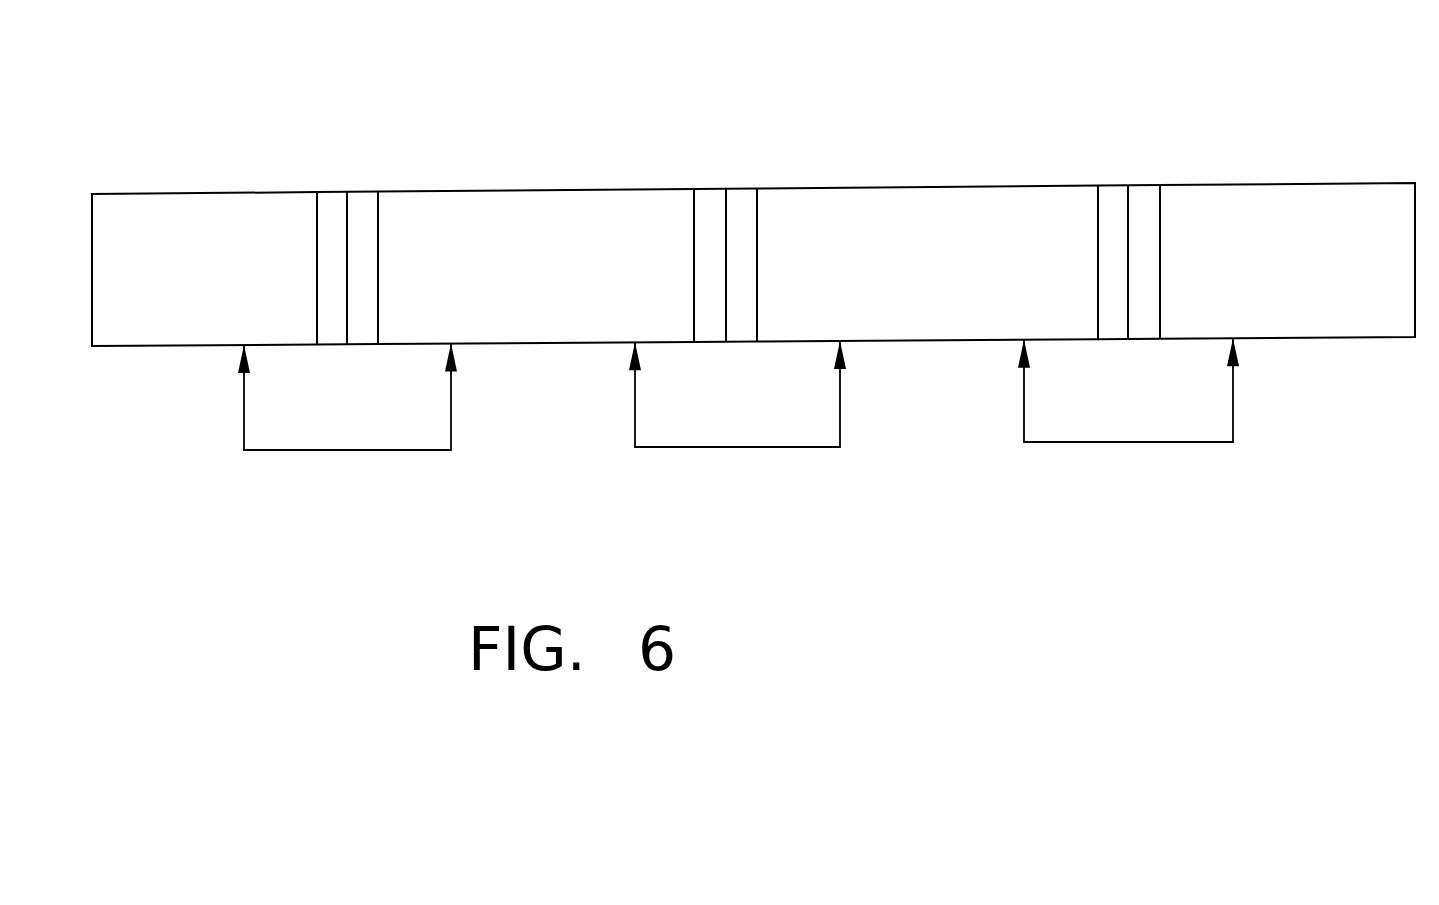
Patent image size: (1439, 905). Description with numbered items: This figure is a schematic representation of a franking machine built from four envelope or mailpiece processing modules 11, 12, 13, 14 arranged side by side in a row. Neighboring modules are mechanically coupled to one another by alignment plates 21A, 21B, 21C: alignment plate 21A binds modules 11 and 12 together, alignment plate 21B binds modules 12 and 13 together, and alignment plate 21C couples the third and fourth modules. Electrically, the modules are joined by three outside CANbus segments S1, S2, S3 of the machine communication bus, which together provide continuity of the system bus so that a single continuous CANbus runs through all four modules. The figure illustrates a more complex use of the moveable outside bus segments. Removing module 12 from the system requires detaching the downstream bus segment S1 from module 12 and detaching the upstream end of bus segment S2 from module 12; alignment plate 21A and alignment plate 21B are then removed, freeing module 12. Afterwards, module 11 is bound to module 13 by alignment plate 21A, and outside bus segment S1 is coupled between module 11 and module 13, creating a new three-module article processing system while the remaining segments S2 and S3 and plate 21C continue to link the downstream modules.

The envelope processing module 11 is at (158, 194).
The envelope processing module 12 is at (497, 190).
The envelope processing module 13 is at (887, 187).
The envelope processing module 14 is at (1257, 183).
The alignment plate 21A is at (317, 264).
The alignment plate 21B is at (694, 267).
The alignment plate 21C is at (1098, 250).
The outside bus segment S1 is at (347, 450).
The outside bus segment S2 is at (753, 447).
The outside bus segment S3 is at (1127, 442).